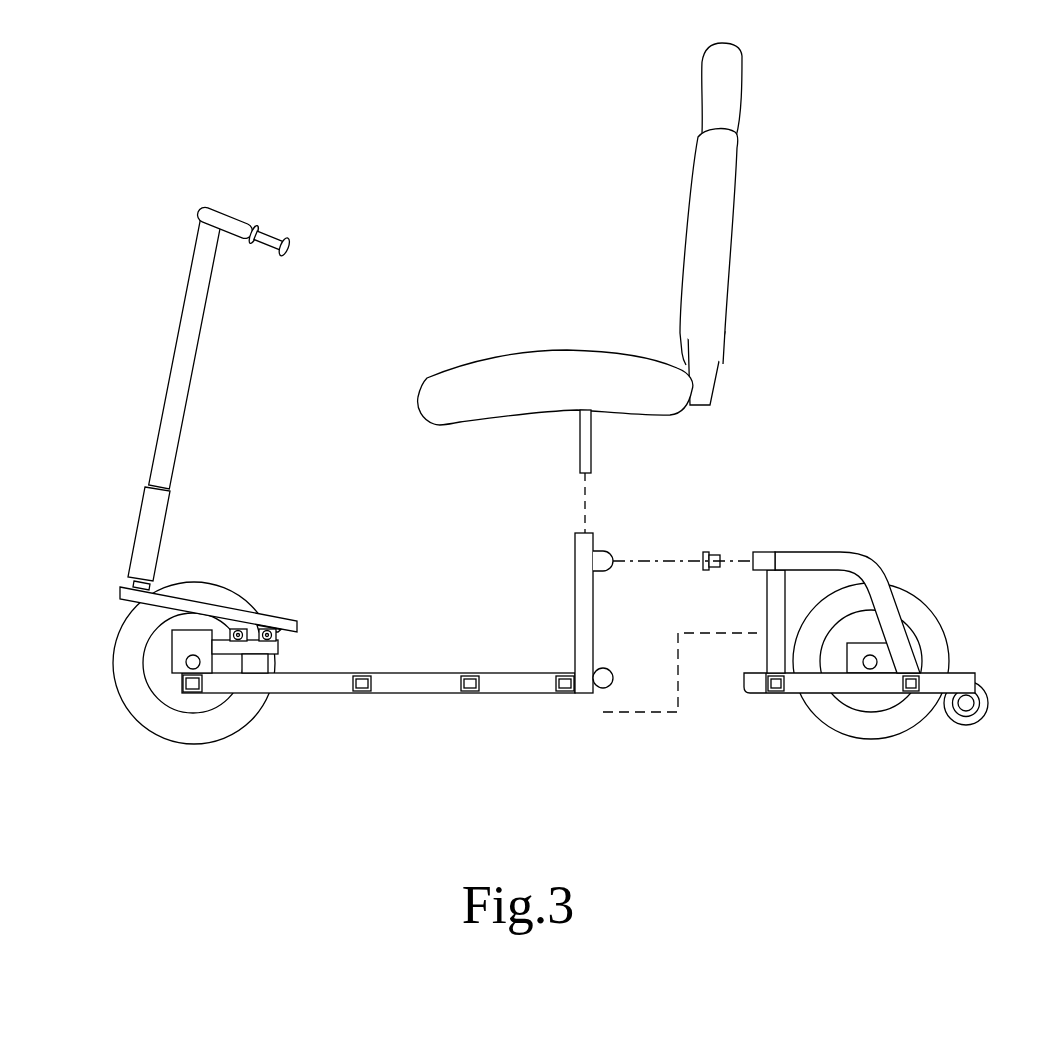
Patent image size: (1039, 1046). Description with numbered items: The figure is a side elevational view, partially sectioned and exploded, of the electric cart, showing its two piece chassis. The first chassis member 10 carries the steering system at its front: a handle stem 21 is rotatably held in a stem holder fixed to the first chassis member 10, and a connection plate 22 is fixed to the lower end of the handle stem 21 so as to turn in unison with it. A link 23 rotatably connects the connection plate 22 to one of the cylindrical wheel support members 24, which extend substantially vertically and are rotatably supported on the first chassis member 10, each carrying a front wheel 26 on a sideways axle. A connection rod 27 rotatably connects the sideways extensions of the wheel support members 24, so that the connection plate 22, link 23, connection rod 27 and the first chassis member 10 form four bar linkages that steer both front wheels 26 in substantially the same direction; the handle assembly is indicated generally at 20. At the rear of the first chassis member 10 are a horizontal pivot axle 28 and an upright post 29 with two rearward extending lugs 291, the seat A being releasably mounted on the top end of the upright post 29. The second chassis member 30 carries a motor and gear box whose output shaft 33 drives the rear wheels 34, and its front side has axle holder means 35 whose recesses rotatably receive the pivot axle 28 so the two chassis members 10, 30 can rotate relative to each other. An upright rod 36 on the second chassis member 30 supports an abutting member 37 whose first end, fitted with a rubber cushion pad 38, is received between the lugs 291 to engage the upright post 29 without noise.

The first chassis member 10 is at (416, 688).
The steering handle assembly 20 is at (131, 522).
The handle stem 21 is at (194, 313).
The connection plate 22 is at (267, 621).
The link 23 is at (278, 638).
The wheel support member 24 is at (182, 641).
The front wheel 26 is at (213, 724).
The connection rod 27 is at (238, 628).
The pivot axle 28 is at (601, 688).
The upright post 29 is at (586, 623).
The lug 291 is at (605, 558).
The second chassis member 30 is at (865, 683).
The output shaft 33 is at (873, 658).
The rear wheel 34 is at (908, 714).
The axle holder means 35 is at (756, 682).
The upright rod 36 is at (776, 600).
The abutting member 37 is at (878, 568).
The cushion pad 38 is at (708, 553).
The seat A is at (711, 213).